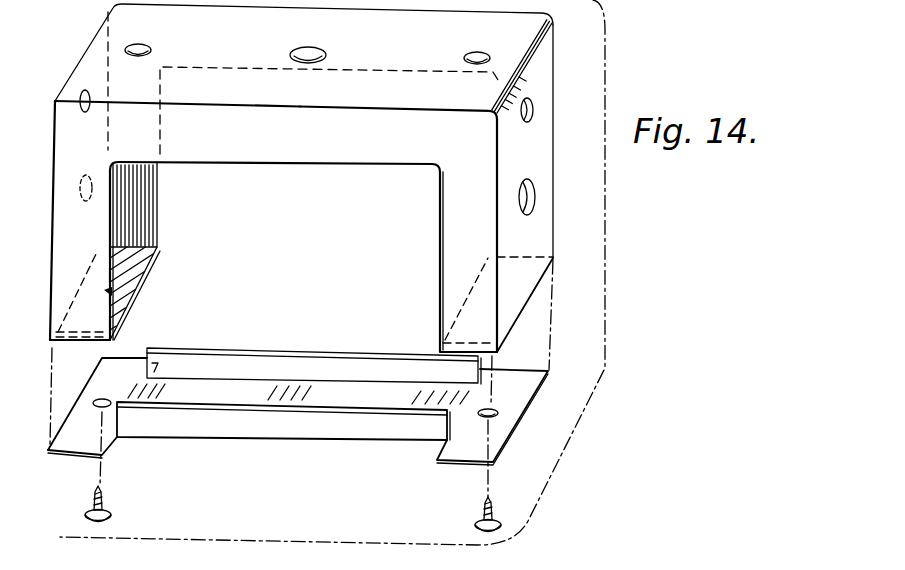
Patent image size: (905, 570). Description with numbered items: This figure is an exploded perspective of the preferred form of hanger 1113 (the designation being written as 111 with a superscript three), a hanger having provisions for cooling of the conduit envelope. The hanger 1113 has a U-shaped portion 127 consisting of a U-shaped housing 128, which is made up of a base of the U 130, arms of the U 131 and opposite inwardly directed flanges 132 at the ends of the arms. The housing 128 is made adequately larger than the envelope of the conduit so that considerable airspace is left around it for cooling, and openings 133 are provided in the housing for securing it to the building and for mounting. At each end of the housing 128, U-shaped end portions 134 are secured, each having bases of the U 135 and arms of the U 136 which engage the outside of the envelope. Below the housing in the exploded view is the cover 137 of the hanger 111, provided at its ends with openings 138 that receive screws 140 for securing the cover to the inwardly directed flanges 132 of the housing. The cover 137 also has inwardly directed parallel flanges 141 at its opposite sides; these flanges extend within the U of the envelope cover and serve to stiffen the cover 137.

The U-shaped portion 127 is at (353, 148).
The U-shaped housing 128 is at (451, 40).
The base of the U 130 is at (284, 38).
The arms of the U 131 is at (507, 235).
The inwardly directed flanges 132 is at (513, 298).
The openings 133 is at (535, 205).
The U-shaped end portions 134 is at (181, 124).
The bases of the U 135 is at (398, 128).
The arms of the U 136 is at (458, 230).
The cover 137 is at (458, 449).
The openings 138 is at (497, 413).
The screws 140 is at (480, 512).
The inwardly directed parallel flanges 141 is at (247, 428).
The hanger 1113 is at (535, 140).
The hanger 111 is at (573, 127).